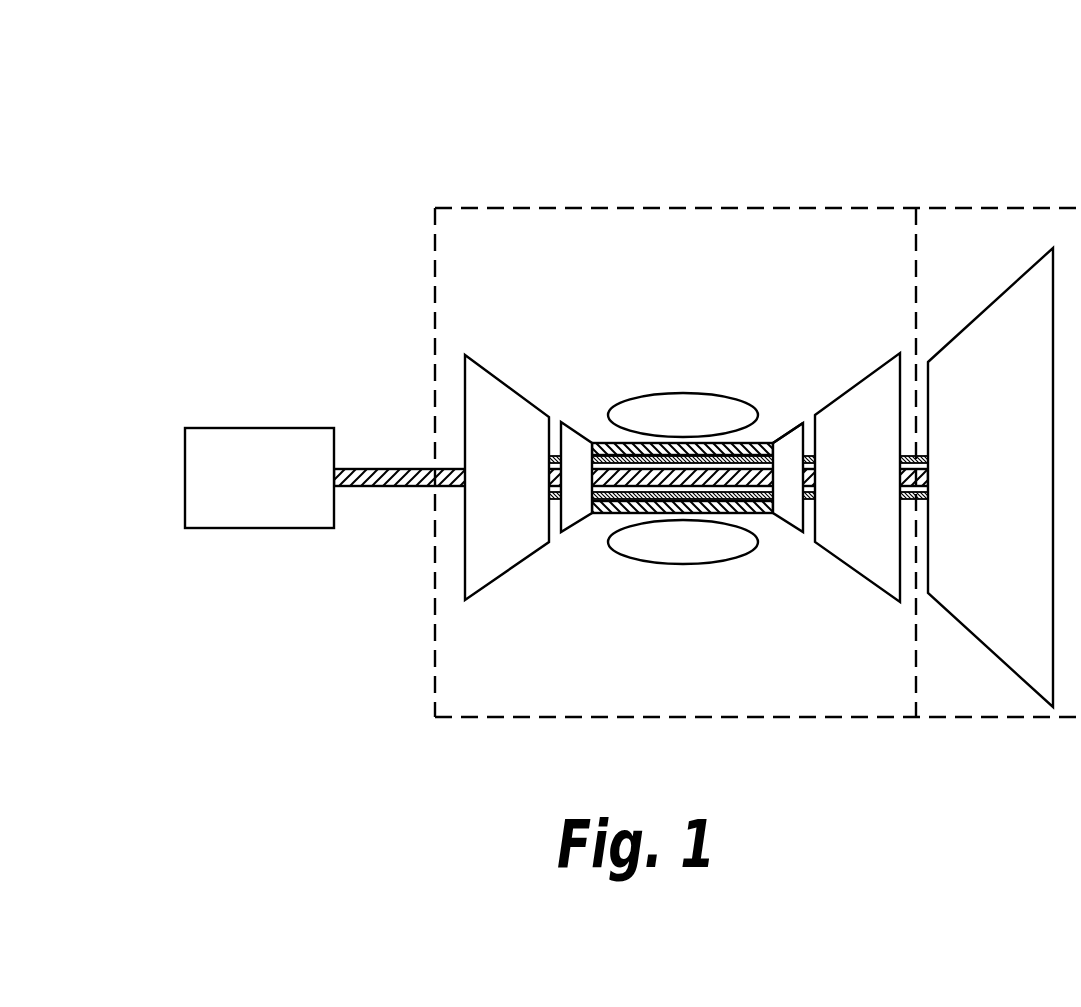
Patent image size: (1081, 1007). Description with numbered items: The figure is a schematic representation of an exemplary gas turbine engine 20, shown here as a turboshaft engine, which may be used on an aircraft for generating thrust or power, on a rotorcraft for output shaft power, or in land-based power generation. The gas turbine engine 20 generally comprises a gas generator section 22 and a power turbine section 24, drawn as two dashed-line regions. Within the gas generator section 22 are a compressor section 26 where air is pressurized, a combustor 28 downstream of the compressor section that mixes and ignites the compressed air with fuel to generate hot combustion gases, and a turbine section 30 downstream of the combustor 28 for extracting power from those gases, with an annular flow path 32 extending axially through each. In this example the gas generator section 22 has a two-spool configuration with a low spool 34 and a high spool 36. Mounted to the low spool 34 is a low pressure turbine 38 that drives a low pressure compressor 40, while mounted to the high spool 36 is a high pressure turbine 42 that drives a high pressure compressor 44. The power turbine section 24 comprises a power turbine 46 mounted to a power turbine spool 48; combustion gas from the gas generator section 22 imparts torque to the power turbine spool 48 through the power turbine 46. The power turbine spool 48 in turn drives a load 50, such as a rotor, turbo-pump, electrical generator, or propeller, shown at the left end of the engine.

The gas turbine engine 20 is at (952, 74).
The gas generator section 22 is at (688, 208).
The power turbine section 24 is at (997, 208).
The compressor section 26 is at (553, 566).
The combustor 28 is at (681, 584).
The turbine section 30 is at (808, 562).
The annular flow path 32 is at (698, 379).
The low spool 34 is at (554, 455).
The high spool 36 is at (765, 438).
The low pressure turbine 38 is at (858, 383).
The low pressure compressor 40 is at (507, 383).
The high pressure turbine 42 is at (790, 430).
The high pressure compressor 44 is at (583, 437).
The power turbine 46 is at (990, 304).
The power turbine spool 48 is at (923, 388).
The load 50 is at (253, 428).